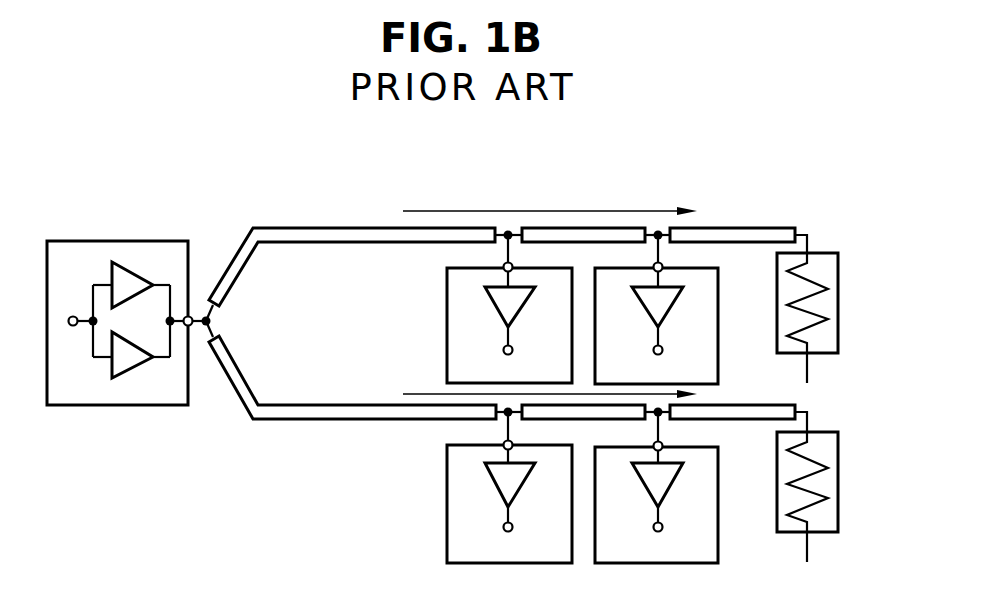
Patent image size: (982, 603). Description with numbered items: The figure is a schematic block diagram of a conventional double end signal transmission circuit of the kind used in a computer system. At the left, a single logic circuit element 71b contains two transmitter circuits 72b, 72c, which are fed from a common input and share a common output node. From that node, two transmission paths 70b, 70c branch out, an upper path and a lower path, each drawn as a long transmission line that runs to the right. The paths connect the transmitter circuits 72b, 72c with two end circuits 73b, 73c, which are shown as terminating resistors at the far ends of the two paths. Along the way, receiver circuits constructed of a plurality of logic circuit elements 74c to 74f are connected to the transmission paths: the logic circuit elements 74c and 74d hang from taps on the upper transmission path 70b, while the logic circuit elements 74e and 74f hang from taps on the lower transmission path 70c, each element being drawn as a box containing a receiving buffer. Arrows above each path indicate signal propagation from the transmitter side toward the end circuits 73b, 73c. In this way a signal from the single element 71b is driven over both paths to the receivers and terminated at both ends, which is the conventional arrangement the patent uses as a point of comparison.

The logic circuit element 71b is at (120, 291).
The transmitter circuit 72b is at (128, 279).
The transmitter circuit 72c is at (129, 365).
The transmission path 70b is at (338, 228).
The transmission path 70c is at (333, 405).
The logic circuit element 74c is at (447, 287).
The logic circuit element 74d is at (718, 373).
The logic circuit element 74e is at (447, 484).
The logic circuit element 74f is at (718, 550).
The end circuit 73b is at (826, 253).
The end circuit 73c is at (826, 432).